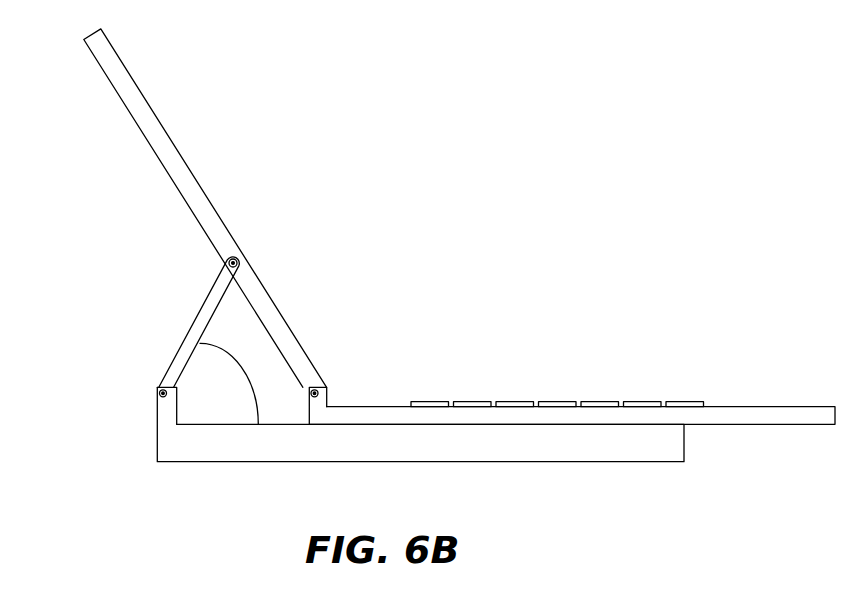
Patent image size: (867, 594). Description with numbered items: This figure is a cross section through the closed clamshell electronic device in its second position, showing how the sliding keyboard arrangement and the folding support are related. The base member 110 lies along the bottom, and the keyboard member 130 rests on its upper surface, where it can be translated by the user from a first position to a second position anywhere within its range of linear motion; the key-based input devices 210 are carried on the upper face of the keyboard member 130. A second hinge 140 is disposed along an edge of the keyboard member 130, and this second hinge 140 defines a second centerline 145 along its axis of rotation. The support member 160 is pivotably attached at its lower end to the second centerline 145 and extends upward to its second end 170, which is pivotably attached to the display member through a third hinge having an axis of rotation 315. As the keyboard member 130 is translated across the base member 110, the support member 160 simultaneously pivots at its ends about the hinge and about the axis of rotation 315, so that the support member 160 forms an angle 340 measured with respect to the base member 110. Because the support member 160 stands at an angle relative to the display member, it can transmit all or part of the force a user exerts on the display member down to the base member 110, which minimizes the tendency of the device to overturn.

The base member 110 is at (623, 443).
The keyboard member 130 is at (733, 416).
The key-based input devices 210 is at (520, 402).
The second hinge 140 is at (157, 417).
The second centerline 145 is at (158, 392).
The support member 160 is at (180, 337).
The second end 170 is at (236, 257).
The axis of rotation 315 is at (237, 261).
The angle 340 is at (233, 357).